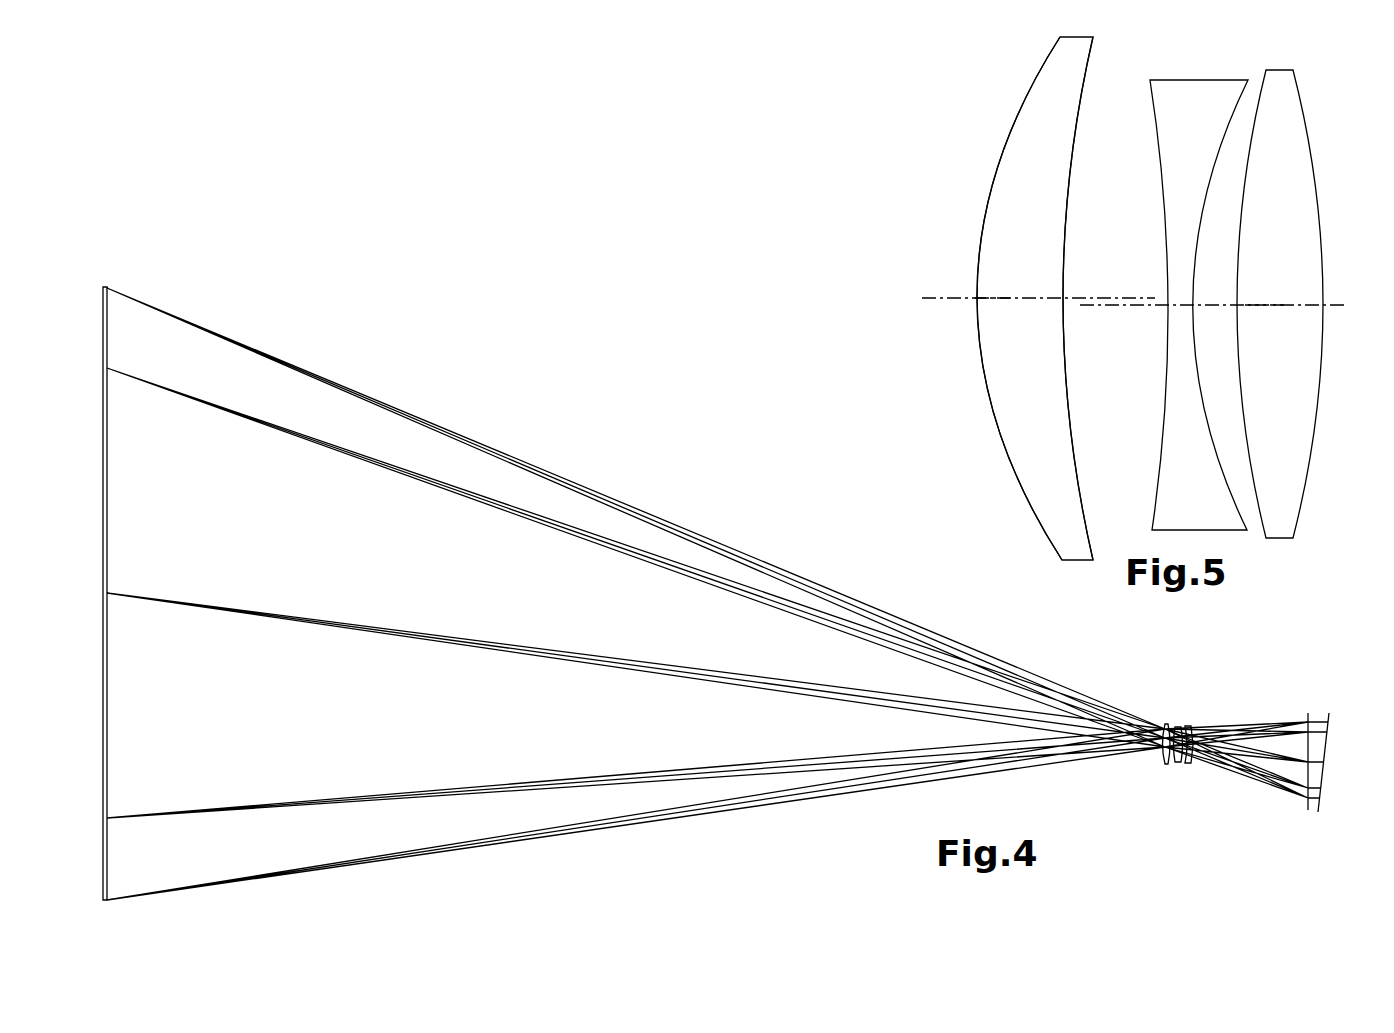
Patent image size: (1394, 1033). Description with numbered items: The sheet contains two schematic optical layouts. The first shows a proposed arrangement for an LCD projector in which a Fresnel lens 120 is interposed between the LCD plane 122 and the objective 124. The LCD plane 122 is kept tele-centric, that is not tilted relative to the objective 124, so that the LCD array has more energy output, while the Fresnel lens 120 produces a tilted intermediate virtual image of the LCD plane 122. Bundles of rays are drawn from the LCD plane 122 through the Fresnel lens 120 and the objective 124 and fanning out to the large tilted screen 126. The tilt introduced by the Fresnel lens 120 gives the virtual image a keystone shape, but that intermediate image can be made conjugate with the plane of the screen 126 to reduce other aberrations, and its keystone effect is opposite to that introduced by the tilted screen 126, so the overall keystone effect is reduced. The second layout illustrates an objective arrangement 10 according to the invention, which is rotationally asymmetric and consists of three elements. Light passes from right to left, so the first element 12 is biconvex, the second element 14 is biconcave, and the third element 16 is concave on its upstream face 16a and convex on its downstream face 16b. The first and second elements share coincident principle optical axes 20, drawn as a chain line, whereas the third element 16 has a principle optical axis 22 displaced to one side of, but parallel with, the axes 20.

In FIG. 5, the objective arrangement 10 is at (978, 141).
In FIG. 5, the first element 12 is at (1278, 413).
In FIG. 5, the second element 14 is at (1183, 405).
In FIG. 5, the third element 16 is at (1027, 385).
In FIG. 5, the upstream face 16a is at (1106, 298).
In FIG. 5, the downstream face 16b is at (979, 338).
In FIG. 5, the principle optical axes 20 is at (1263, 305).
In FIG. 5, the principle optical axis 22 is at (993, 298).
In FIG. 4, the Fresnel lens 120 is at (1308, 713).
In FIG. 4, the LCD plane 122 is at (1367, 756).
In FIG. 4, the objective 124 is at (1170, 724).
In FIG. 4, the screen 126 is at (104, 448).